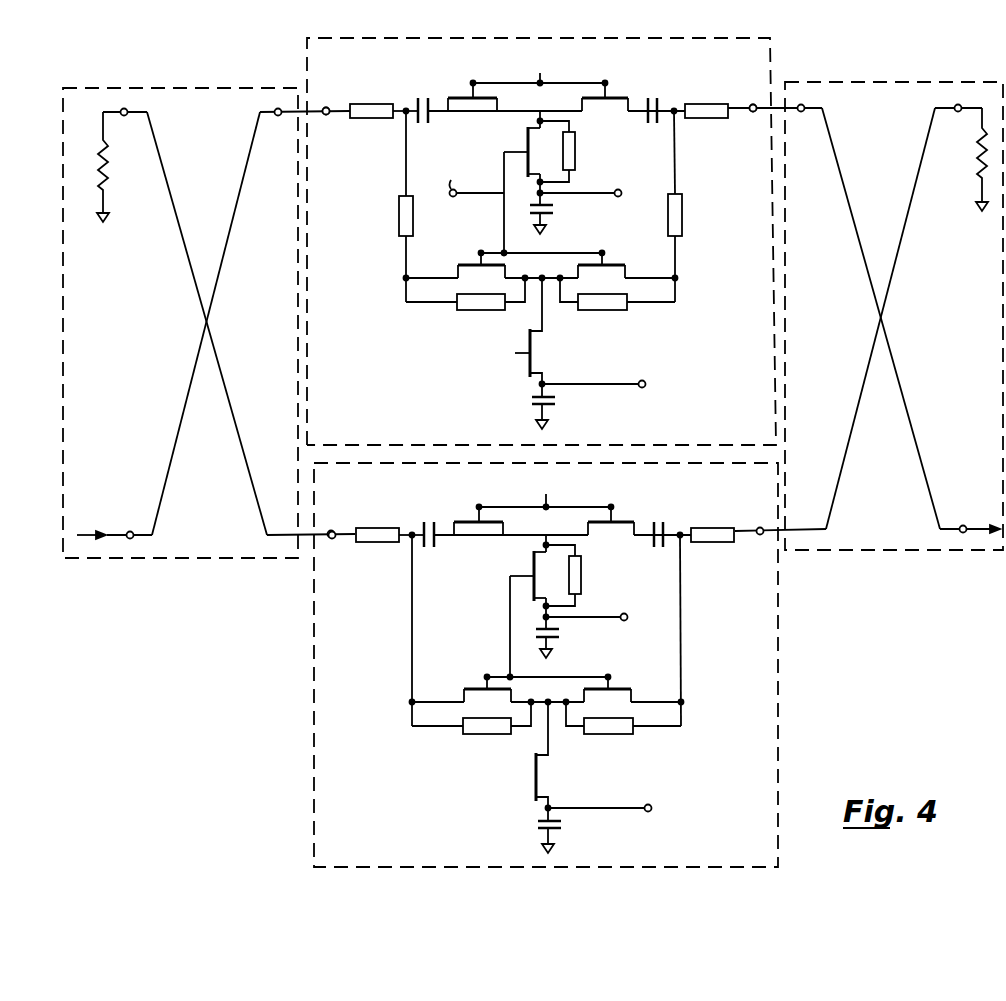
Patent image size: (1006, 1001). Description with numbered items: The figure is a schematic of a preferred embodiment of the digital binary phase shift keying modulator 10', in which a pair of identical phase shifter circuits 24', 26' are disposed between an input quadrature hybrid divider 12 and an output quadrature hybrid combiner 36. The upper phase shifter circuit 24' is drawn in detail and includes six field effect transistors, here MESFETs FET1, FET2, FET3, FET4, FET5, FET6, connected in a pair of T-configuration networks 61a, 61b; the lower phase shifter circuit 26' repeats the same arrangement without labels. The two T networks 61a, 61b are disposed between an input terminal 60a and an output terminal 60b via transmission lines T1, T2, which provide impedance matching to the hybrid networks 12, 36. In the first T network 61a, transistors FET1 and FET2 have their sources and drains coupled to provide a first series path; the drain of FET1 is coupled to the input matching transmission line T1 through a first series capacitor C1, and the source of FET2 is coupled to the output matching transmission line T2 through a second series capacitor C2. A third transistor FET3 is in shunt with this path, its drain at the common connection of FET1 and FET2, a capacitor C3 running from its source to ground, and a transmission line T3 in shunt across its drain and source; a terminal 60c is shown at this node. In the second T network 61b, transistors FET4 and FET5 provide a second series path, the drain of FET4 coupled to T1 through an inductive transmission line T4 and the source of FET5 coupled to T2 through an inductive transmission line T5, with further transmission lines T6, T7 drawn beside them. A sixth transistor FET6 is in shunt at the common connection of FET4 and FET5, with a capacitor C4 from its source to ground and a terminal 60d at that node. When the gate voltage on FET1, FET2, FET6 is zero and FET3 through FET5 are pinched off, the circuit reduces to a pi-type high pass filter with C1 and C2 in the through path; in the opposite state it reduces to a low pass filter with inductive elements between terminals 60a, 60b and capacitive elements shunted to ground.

The digital binary phase shift keying modulator 10' is at (200, 663).
The input quadrature hybrid divider 12 is at (180, 88).
The output quadrature hybrid combiner 36 is at (868, 82).
The phase shifter circuit 24' is at (541, 228).
The phase shifter circuit 26' is at (569, 665).
The input terminal 60a is at (326, 106).
The output terminal 60b is at (752, 104).
The control terminal 60c is at (620, 190).
The control terminal 60d is at (645, 381).
The first T-configuration network 61a is at (538, 177).
The second T-configuration network 61b is at (542, 337).
The input matching transmission line T1 is at (372, 103).
The output matching transmission line T2 is at (705, 103).
The shunt transmission line T3 is at (577, 152).
The first inductive element transmission line T4 is at (398, 205).
The second inductive element transmission line T5 is at (683, 211).
The transmission line T6 is at (476, 311).
The transmission line T7 is at (605, 311).
The first series capacitor C1 is at (424, 124).
The second series capacitor C2 is at (655, 126).
The capacitor C3 is at (556, 208).
The capacitor C4 is at (560, 401).
The field effect transistor FET1 is at (466, 106).
The field effect transistor FET2 is at (610, 112).
The field effect transistor FET3 is at (523, 147).
The field effect transistor FET4 is at (476, 255).
The field effect transistor FET5 is at (618, 257).
The field effect transistor FET6 is at (520, 372).